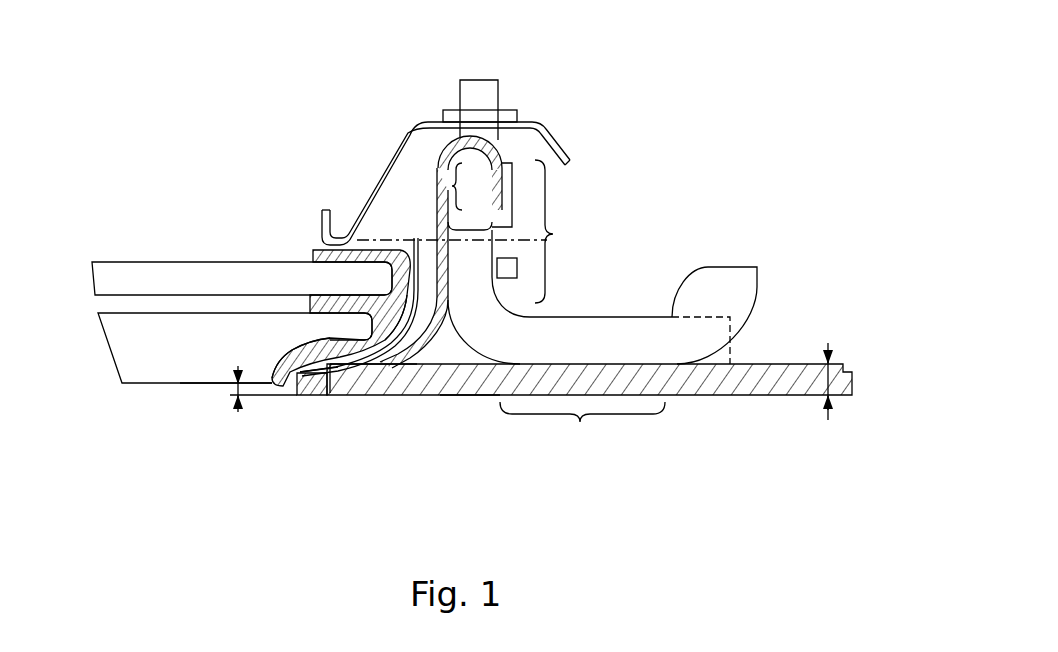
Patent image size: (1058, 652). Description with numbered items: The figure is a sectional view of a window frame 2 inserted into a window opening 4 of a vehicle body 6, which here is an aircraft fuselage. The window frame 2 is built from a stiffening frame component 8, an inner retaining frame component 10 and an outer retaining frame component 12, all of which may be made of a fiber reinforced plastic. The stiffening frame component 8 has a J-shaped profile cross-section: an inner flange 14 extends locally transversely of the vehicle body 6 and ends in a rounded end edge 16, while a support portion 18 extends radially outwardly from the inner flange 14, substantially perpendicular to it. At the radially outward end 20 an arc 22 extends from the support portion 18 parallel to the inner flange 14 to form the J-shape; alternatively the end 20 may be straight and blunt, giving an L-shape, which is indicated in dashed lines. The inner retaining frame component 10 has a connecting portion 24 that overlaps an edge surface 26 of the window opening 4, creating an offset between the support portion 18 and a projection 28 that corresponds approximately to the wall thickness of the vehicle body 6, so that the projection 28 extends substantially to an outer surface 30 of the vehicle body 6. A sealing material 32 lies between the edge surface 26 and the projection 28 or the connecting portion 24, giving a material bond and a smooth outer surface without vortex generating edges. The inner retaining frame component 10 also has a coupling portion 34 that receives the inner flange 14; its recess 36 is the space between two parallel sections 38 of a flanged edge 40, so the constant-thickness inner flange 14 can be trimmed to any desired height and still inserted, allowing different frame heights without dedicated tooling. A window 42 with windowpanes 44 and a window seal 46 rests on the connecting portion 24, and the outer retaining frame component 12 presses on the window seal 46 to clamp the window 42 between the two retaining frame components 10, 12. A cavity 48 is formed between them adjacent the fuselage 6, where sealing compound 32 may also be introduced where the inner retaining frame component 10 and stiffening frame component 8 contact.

The window frame 2 is at (620, 47).
The window opening 4 is at (263, 399).
The vehicle body 6 is at (794, 367).
The stiffening frame component 8 is at (593, 332).
The inner retaining frame component 10 is at (411, 350).
The outer retaining frame component 12 is at (426, 122).
The inner flange 14 is at (565, 231).
The rounded end edge 16 is at (480, 150).
The support portion 18 is at (582, 429).
The radially outward end 20 is at (780, 257).
The arc 22 is at (749, 327).
The connecting portion 24 is at (358, 372).
The edge surface 26 is at (325, 352).
The projection 28 is at (298, 367).
The outer surface 30 is at (457, 404).
The sealing material 32 is at (323, 385).
The coupling portion 34 is at (434, 268).
The recess 36 is at (461, 171).
The sections 38 is at (474, 186).
The flanged edge 40 is at (513, 160).
The window 42 is at (157, 218).
The windowpanes 44 is at (113, 277).
The window seal 46 is at (318, 250).
The cavity 48 is at (466, 393).